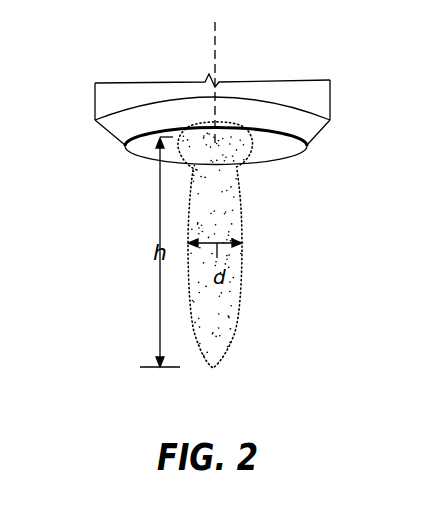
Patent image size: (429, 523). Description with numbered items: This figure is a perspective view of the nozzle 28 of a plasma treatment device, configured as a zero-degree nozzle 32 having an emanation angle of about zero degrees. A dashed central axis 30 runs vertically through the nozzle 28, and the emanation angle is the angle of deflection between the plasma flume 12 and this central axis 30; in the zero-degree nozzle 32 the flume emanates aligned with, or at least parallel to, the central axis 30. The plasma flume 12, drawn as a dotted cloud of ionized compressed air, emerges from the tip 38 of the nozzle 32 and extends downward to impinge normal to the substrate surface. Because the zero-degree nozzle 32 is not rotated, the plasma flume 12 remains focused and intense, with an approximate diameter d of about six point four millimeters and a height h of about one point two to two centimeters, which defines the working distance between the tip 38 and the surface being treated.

The plasma flume 12 is at (218, 192).
The nozzle 28 is at (325, 95).
The central axis 30 is at (213, 47).
The 0-degree nozzle 32 is at (280, 113).
The tip 38 is at (275, 152).